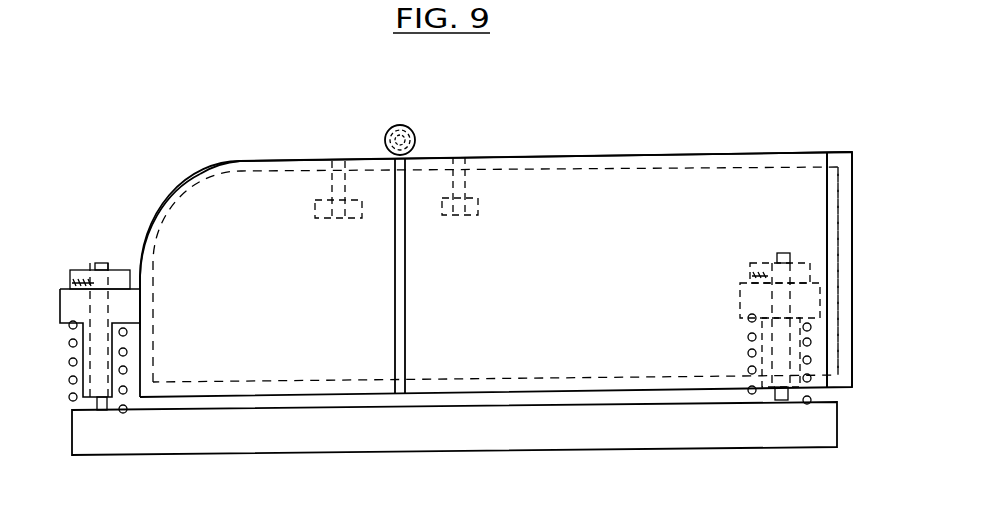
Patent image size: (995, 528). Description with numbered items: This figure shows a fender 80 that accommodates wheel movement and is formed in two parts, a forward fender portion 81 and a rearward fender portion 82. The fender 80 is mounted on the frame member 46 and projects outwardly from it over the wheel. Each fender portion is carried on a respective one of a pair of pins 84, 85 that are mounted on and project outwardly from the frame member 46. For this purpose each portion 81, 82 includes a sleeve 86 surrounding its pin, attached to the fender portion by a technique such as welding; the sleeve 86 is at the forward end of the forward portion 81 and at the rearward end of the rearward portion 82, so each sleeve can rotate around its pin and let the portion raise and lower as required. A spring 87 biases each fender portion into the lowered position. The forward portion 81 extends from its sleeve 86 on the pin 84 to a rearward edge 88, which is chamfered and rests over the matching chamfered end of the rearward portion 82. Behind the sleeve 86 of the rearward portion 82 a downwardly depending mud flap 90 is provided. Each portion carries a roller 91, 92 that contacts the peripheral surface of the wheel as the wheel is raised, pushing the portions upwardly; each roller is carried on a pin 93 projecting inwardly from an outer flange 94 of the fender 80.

The frame member 46 is at (660, 430).
The fender 80 is at (559, 143).
The forward fender portion 81 is at (158, 210).
The rearward fender portion 82 is at (680, 157).
The pin 84 is at (100, 262).
The pin 85 is at (782, 253).
The sleeve 86 is at (130, 300).
The spring 87 is at (70, 400).
The rearward edge 88 is at (394, 320).
The mud flap 90 is at (839, 256).
The roller 91 is at (315, 212).
The roller 92 is at (480, 212).
The pin 93 is at (331, 186).
The outer flange 94 is at (246, 162).